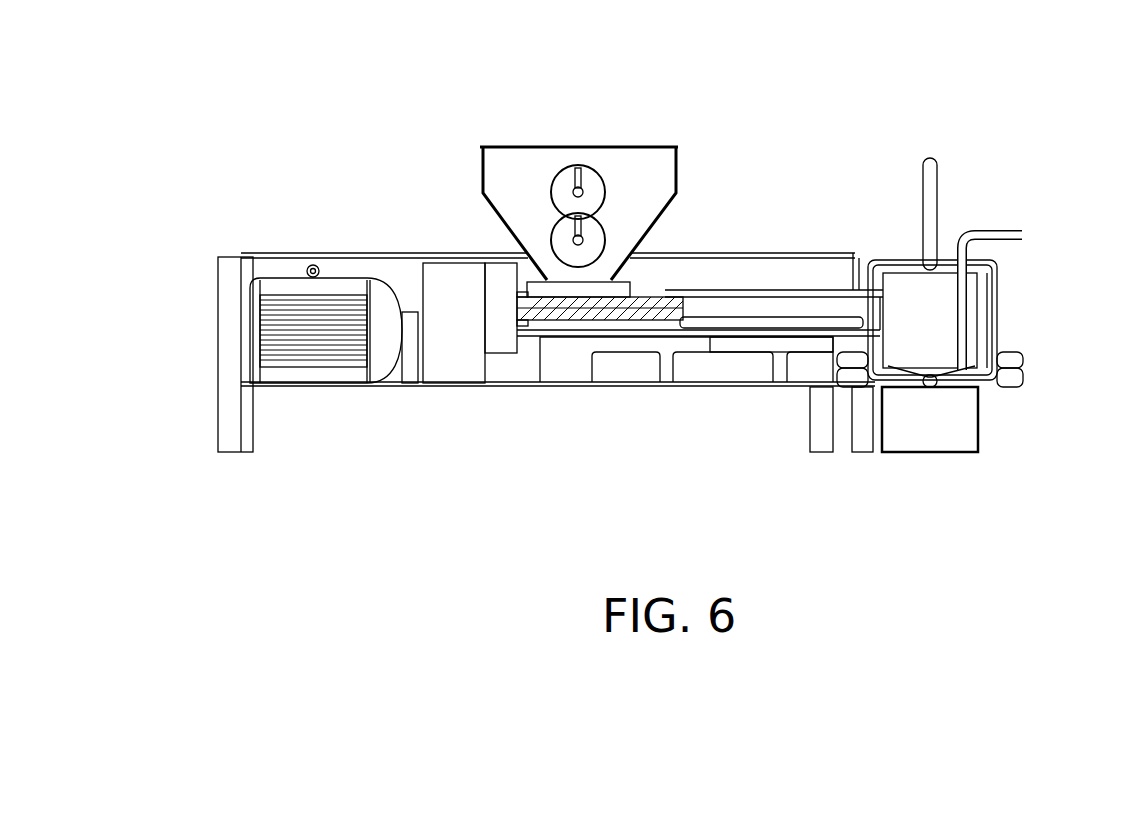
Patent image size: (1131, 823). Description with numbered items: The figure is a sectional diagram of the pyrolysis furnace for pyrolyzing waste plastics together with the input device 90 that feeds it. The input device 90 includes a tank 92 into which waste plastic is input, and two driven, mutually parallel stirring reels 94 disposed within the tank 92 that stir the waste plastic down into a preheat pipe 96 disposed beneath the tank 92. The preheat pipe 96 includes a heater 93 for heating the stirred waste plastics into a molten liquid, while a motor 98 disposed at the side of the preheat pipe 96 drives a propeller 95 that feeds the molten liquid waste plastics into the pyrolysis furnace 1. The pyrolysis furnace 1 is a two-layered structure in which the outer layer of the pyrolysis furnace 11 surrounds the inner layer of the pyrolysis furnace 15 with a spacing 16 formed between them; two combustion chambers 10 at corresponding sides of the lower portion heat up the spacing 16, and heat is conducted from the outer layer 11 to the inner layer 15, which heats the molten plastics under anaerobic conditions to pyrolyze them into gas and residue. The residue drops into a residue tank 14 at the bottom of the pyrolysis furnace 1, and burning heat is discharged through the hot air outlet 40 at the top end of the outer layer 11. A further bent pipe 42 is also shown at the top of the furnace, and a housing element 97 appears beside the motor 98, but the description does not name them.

The pyrolysis furnace 1 is at (964, 330).
The combustion chambers 10 is at (1023, 358).
The outer layer of the pyrolysis furnace 11 is at (997, 318).
The residue tank 14 is at (963, 420).
The inner layer of the pyrolysis furnace 15 is at (997, 285).
The spacing 16 is at (998, 385).
The hot air outlet 40 is at (940, 192).
The outlet tube 42 is at (982, 230).
The input device 90 is at (347, 230).
The tank 92 is at (477, 168).
The heater 93 is at (772, 322).
The stirring reels 94 is at (567, 180).
The propeller 95 is at (650, 297).
The preheat pipe 96 is at (710, 342).
The drive housing 97 is at (467, 370).
The motor 98 is at (383, 352).